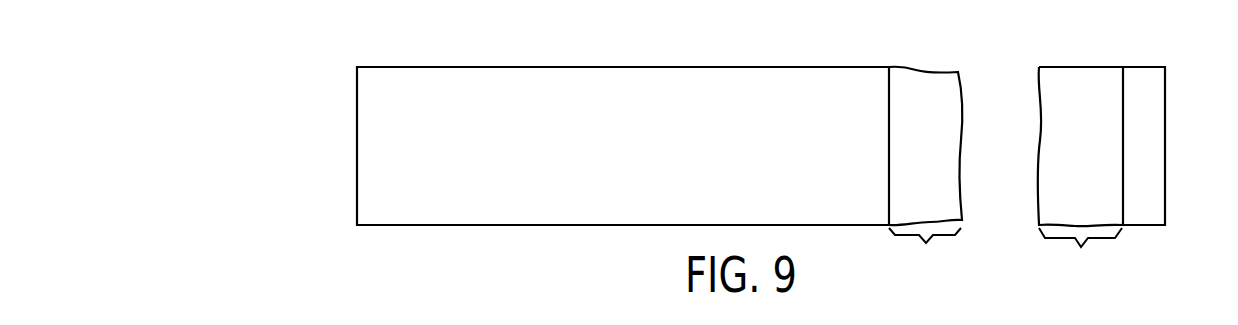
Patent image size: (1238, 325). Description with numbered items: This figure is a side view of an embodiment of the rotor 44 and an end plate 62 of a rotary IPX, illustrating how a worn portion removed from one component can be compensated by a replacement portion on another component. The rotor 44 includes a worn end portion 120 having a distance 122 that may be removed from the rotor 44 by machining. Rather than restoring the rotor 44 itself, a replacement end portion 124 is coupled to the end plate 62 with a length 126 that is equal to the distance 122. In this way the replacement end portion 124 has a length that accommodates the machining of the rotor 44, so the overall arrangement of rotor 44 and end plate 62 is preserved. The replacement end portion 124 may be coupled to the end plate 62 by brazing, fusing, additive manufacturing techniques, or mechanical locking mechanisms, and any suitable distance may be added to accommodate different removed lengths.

The rotor 44 is at (602, 73).
The worn end portion 120 is at (922, 81).
The distance 122 is at (955, 297).
The replacement end portion 124 is at (1097, 73).
The end plate 62 is at (1149, 73).
The length 126 is at (1108, 298).